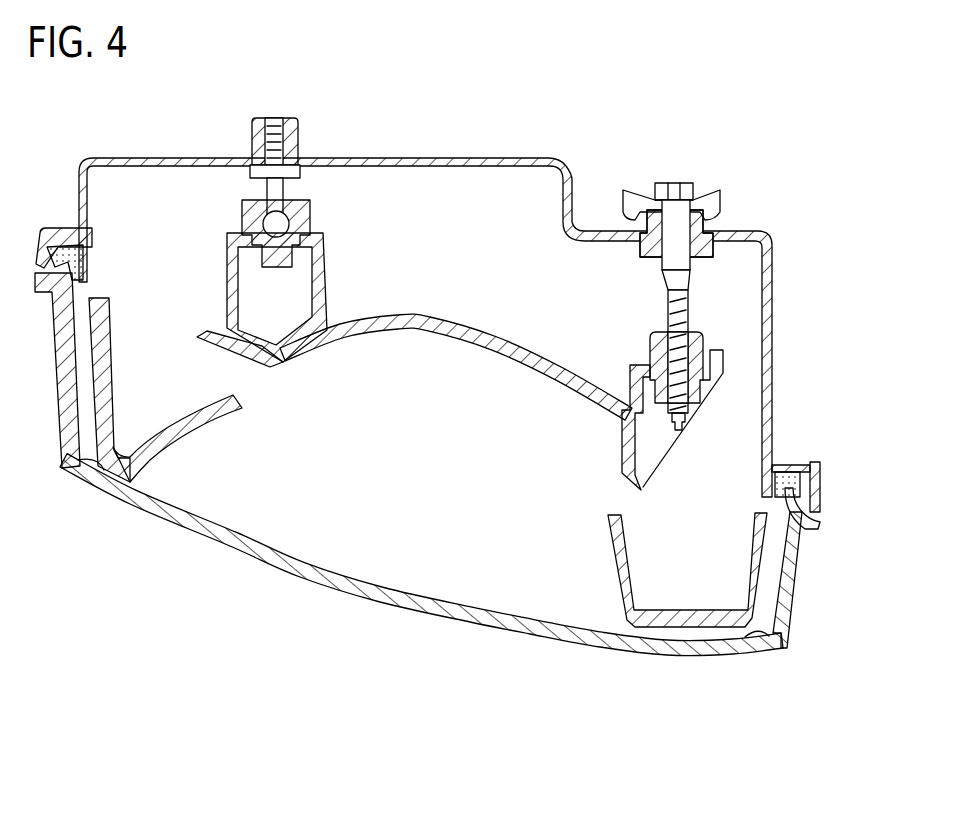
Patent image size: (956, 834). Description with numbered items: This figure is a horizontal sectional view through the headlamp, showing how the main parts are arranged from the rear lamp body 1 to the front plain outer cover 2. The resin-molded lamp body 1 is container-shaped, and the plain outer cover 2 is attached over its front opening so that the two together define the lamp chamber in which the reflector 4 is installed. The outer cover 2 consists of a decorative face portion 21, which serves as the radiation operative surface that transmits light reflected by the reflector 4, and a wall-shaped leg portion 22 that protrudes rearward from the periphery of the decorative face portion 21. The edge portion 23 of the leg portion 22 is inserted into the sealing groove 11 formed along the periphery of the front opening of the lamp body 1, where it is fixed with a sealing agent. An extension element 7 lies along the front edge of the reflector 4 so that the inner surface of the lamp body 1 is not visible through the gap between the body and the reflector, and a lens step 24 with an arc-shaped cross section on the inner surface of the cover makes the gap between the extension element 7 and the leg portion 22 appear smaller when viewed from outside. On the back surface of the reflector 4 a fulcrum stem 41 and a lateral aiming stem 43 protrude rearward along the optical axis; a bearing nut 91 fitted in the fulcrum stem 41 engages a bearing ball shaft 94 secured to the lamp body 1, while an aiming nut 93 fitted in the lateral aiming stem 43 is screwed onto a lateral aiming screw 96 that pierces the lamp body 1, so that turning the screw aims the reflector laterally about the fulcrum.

The lamp body 1 is at (544, 157).
The plain outer cover 2 is at (400, 600).
The reflector 4 is at (400, 329).
The extension element 7 is at (195, 422).
The sealing groove 11 is at (795, 470).
The decorative face portion 21 is at (640, 655).
The leg portion 22 is at (798, 607).
The edge portion 23 is at (810, 522).
The lens step 24 is at (93, 478).
The fulcrum stem 41 is at (324, 291).
The lateral aiming stem 43 is at (633, 367).
The bearing nut 91 is at (316, 222).
The aiming nut 93 is at (698, 335).
The bearing ball shaft 94 is at (272, 191).
The lateral aiming screw 96 is at (680, 280).